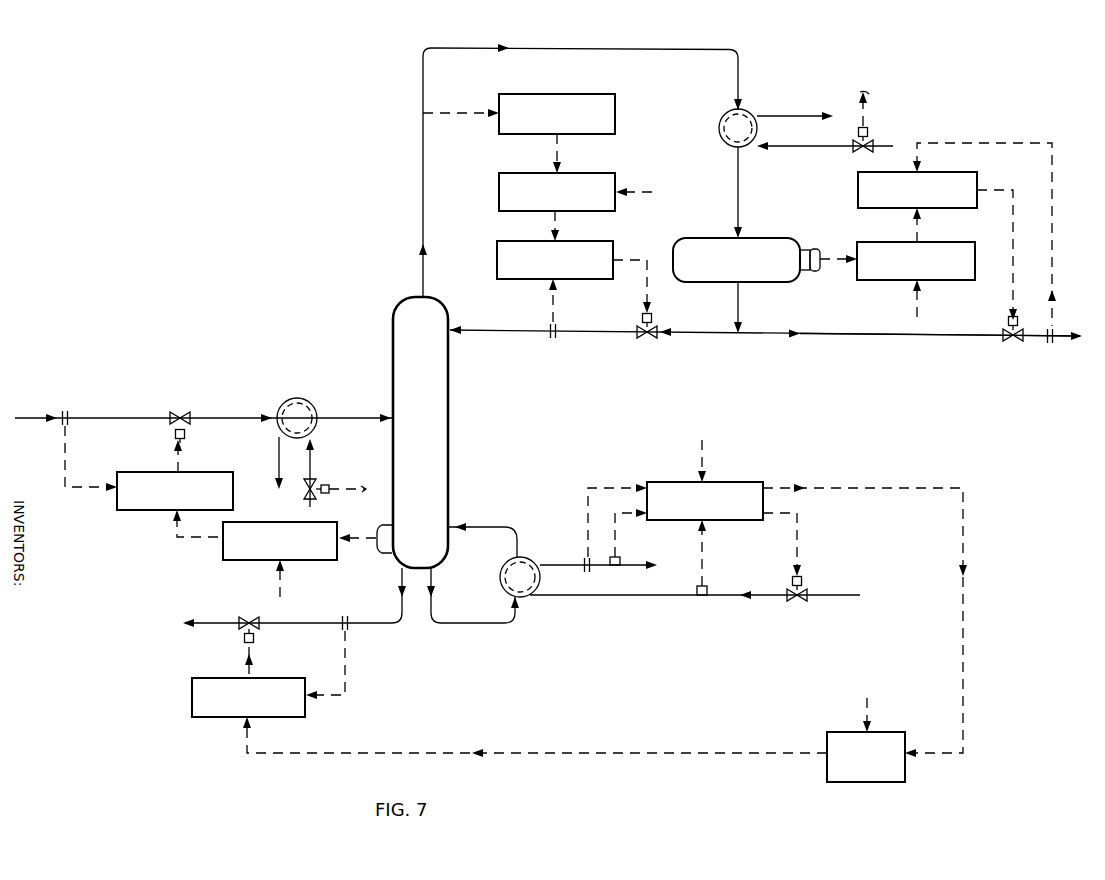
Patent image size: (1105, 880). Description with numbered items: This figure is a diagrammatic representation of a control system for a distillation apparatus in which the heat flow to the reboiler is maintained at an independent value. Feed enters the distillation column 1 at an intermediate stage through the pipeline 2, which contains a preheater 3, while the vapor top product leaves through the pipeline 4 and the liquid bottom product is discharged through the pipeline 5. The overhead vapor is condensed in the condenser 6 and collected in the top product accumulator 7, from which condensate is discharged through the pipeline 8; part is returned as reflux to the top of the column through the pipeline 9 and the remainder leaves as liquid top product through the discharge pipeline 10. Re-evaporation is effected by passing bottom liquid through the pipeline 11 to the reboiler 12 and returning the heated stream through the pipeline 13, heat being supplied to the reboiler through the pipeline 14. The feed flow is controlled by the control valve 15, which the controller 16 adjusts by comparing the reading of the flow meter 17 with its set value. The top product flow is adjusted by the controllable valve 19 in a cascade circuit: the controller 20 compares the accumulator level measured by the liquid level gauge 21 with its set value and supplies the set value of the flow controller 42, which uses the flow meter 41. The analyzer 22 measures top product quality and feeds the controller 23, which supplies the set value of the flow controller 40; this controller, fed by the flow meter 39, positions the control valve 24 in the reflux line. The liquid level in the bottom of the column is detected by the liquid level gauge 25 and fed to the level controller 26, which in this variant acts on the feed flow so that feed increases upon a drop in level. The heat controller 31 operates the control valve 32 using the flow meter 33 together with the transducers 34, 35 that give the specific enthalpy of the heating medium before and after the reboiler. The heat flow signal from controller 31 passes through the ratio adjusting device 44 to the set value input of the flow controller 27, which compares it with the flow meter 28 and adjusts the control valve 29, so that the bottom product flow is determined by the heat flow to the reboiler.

The distillation column 1 is at (423, 449).
The pipeline 2 is at (341, 418).
The preheater 3 is at (310, 406).
The pipeline 4 is at (593, 48).
The pipeline 5 is at (390, 632).
The condenser 6 is at (723, 121).
The top product accumulator 7 is at (760, 238).
The pipeline 8 is at (740, 317).
The pipeline 9 is at (705, 340).
The discharge pipeline 10 is at (863, 340).
The pipeline 11 is at (484, 632).
The reboiler 12 is at (505, 570).
The pipeline 13 is at (478, 527).
The pipeline 14 is at (654, 600).
The control valve 15 is at (181, 410).
The controller 16 is at (125, 512).
The flow meter 17 is at (70, 410).
The controllable valve 19 is at (1008, 342).
The controller 20 is at (945, 242).
The liquid level gauge 21 is at (820, 250).
The analyzer 22 is at (581, 94).
The controller 23 is at (582, 173).
The control valve 24 is at (647, 340).
The liquid level gauge 25 is at (378, 525).
The level controller 26 is at (240, 562).
The flow controller 27 is at (273, 678).
The flow meter 28 is at (358, 607).
The control valve 29 is at (251, 615).
The heat controller 31 is at (724, 482).
The control valve 32 is at (800, 602).
The flow meter 33 is at (585, 557).
The transducer 34 is at (708, 590).
The transducer 35 is at (620, 558).
The flow meter 39 is at (567, 353).
The flow controller 40 is at (581, 242).
The flow meter 41 is at (947, 172).
The flow controller 42 is at (1060, 355).
The ratio adjusting device 44 is at (875, 732).